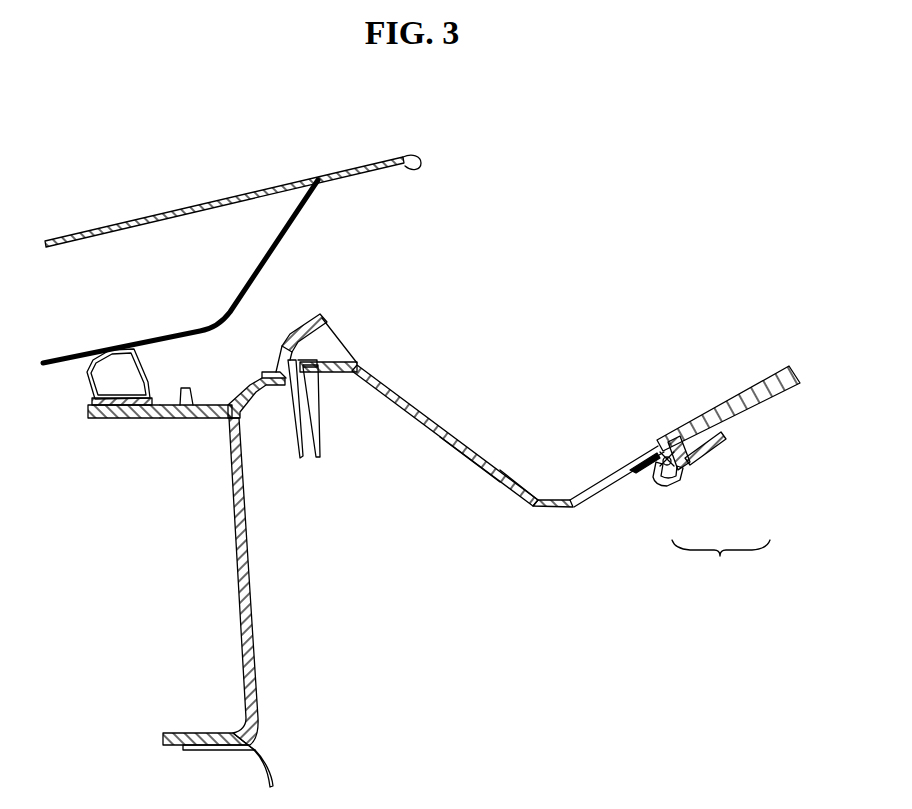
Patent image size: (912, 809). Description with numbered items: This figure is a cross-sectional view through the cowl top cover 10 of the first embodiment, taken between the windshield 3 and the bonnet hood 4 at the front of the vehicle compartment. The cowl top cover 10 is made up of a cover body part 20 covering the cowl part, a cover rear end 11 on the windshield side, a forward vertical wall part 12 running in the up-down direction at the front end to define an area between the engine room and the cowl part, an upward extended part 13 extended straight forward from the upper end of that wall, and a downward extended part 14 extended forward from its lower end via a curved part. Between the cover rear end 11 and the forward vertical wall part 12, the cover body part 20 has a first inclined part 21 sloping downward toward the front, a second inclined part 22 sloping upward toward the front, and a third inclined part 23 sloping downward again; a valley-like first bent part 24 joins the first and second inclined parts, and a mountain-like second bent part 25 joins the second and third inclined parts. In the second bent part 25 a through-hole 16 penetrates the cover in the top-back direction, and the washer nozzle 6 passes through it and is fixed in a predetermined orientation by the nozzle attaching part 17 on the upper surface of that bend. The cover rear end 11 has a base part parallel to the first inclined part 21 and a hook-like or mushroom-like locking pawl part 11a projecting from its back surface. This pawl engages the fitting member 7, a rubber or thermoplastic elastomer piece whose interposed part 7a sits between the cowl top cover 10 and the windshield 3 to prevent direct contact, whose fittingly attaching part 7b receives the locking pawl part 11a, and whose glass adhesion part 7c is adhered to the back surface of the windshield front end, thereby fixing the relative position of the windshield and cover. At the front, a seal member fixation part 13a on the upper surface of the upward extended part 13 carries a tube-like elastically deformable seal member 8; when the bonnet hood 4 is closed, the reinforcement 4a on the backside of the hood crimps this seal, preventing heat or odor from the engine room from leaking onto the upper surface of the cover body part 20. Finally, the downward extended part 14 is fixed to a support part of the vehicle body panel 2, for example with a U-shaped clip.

The vehicle body panel 2 is at (278, 757).
The windshield 3 is at (785, 407).
The bonnet hood 4 is at (209, 193).
The reinforcement 4a is at (291, 229).
The washer nozzle 6 is at (301, 311).
The fitting member 7 is at (721, 561).
The interposed part 7a is at (692, 464).
The fittingly attaching part 7b is at (678, 486).
The glass adhesion part 7c is at (720, 442).
The seal member 8 is at (157, 369).
The cowl top cover 10 is at (447, 411).
The cover rear end 11 is at (667, 456).
The locking pawl part 11a is at (655, 452).
The forward vertical wall part 12 is at (252, 640).
The upward extended part 13 is at (213, 420).
The seal member fixation part 13a is at (112, 418).
The downward extended part 14 is at (178, 738).
The through-hole 16 is at (325, 384).
The nozzle attaching part 17 is at (266, 376).
The cover body part 20 is at (500, 483).
The first inclined part 21 is at (618, 476).
The second inclined part 22 is at (483, 462).
The third inclined part 23 is at (248, 418).
The first bent part 24 is at (553, 507).
The second bent part 25 is at (360, 368).